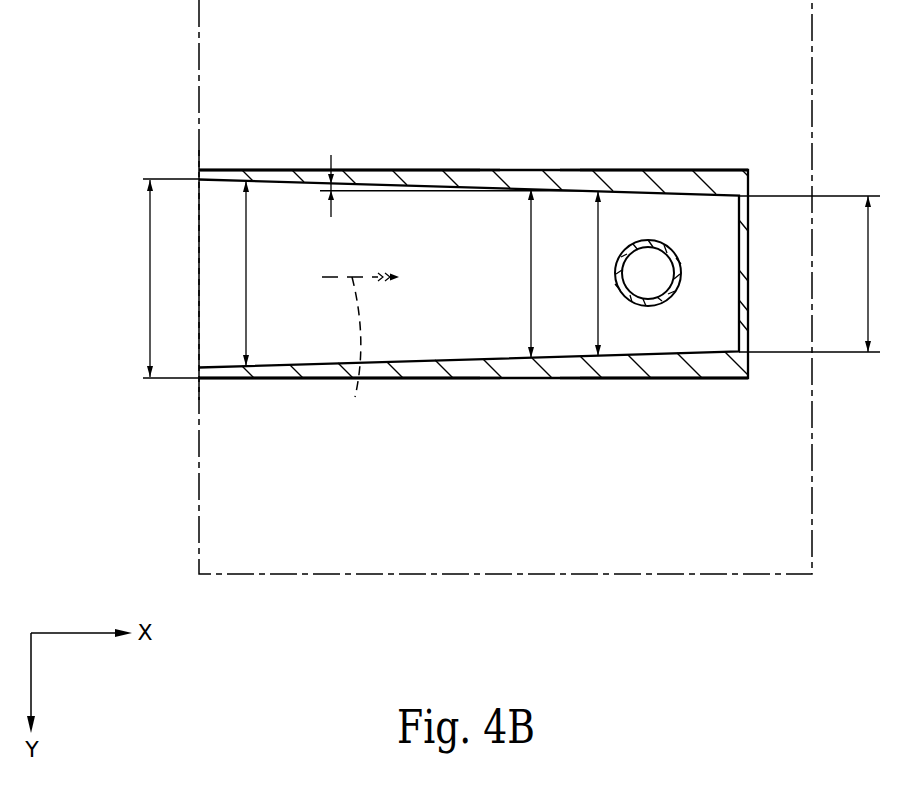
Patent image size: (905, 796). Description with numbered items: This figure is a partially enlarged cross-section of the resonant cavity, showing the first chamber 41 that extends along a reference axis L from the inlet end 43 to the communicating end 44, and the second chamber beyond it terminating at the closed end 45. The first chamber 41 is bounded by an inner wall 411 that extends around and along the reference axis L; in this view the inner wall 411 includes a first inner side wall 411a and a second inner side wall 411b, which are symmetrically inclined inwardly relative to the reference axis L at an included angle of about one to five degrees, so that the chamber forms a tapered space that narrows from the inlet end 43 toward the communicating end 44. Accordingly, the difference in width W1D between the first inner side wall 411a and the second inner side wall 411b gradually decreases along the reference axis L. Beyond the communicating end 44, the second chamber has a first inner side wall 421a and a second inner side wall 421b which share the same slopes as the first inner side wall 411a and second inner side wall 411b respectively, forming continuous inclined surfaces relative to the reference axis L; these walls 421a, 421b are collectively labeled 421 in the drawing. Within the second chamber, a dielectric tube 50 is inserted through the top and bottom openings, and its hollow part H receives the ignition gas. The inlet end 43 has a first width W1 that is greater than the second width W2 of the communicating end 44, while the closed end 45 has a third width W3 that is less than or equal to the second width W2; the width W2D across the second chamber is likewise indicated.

The first chamber 41 is at (325, 327).
The inlet end 43 is at (198, 218).
The communicating end 44 is at (531, 196).
The closed end 45 is at (748, 312).
The dielectric tube 50 is at (665, 300).
The inner wall 411 is at (478, 72).
The first inner side wall 411a is at (367, 183).
The second inner side wall 411b is at (413, 360).
The second wall section 421 is at (752, 72).
The first inner side wall 421a is at (642, 183).
The second inner side wall 421b is at (700, 352).
The hollow part H is at (645, 283).
The reference axis L is at (355, 352).
The first width W1 is at (156, 278).
The difference in width W1D is at (223, 273).
The second width W2 is at (514, 273).
The inner width W2D is at (578, 273).
The third width W3 is at (809, 274).